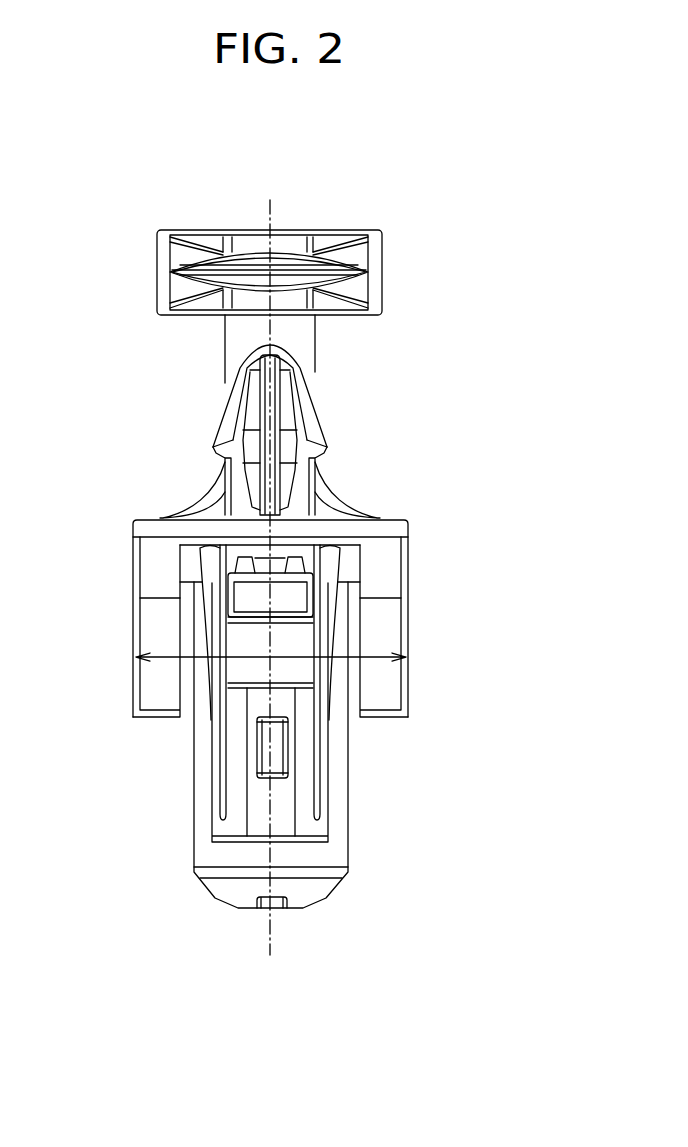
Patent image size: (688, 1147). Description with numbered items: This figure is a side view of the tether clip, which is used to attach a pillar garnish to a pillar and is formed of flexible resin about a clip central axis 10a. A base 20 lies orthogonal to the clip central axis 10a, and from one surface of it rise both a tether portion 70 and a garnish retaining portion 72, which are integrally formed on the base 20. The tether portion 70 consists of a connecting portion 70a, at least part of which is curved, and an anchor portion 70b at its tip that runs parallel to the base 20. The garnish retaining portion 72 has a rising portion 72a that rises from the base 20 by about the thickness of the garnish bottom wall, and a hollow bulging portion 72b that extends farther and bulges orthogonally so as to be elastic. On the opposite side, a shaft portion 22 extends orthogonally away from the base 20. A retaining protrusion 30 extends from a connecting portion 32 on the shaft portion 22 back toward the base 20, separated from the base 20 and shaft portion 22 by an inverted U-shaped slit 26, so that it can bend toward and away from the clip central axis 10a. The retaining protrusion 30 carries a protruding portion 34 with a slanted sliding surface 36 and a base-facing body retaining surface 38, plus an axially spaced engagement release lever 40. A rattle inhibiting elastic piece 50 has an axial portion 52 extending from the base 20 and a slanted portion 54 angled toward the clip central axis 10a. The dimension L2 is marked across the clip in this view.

The clip central axis 10a is at (275, 912).
The base 20 is at (285, 553).
The shaft portion 22 is at (195, 817).
The slit 26 is at (318, 532).
The retaining protrusion 30 is at (331, 708).
The connecting portion 32 is at (302, 818).
The protruding portion 34 is at (273, 700).
The sliding surface 36 is at (295, 785).
The body retaining surface 38 is at (262, 683).
The engagement release lever 40 is at (283, 605).
The rattle inhibiting elastic piece 50 is at (276, 627).
The axial portion 52 is at (165, 573).
The slanted portion 54 is at (273, 621).
The tether portion 70 is at (325, 306).
The connecting portion 70a is at (316, 334).
The anchor portion 70b is at (382, 263).
The garnish retaining portion 72 is at (236, 431).
The rising portion 72a is at (224, 465).
The bulging portion 72b is at (212, 442).
The width dimension L2 is at (271, 649).